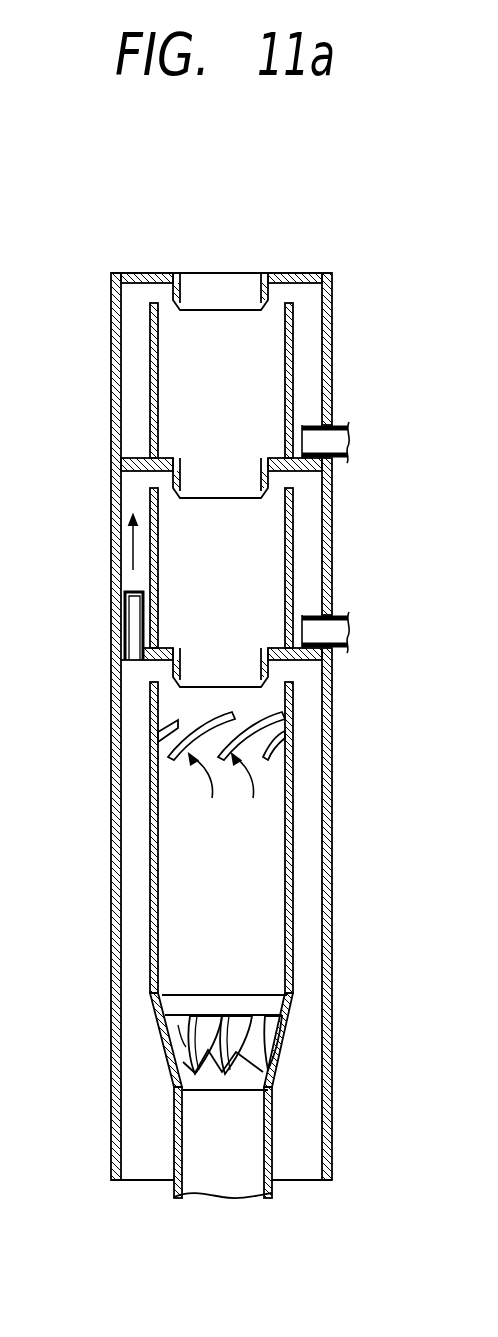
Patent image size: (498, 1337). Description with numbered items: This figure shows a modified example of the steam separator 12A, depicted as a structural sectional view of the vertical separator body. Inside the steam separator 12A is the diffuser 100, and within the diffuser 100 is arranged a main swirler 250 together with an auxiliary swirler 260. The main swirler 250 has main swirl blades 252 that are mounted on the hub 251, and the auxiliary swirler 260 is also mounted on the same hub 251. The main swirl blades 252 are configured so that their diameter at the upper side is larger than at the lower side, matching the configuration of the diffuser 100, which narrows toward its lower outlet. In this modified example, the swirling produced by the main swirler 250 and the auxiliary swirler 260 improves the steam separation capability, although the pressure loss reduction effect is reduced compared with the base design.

The steam separator 12A is at (232, 240).
The diffuser 100 is at (284, 1054).
The main swirler 250 is at (267, 1003).
The hub 251 is at (222, 1011).
The main swirl blades 252 is at (186, 1047).
The auxiliary swirler 260 is at (248, 1080).